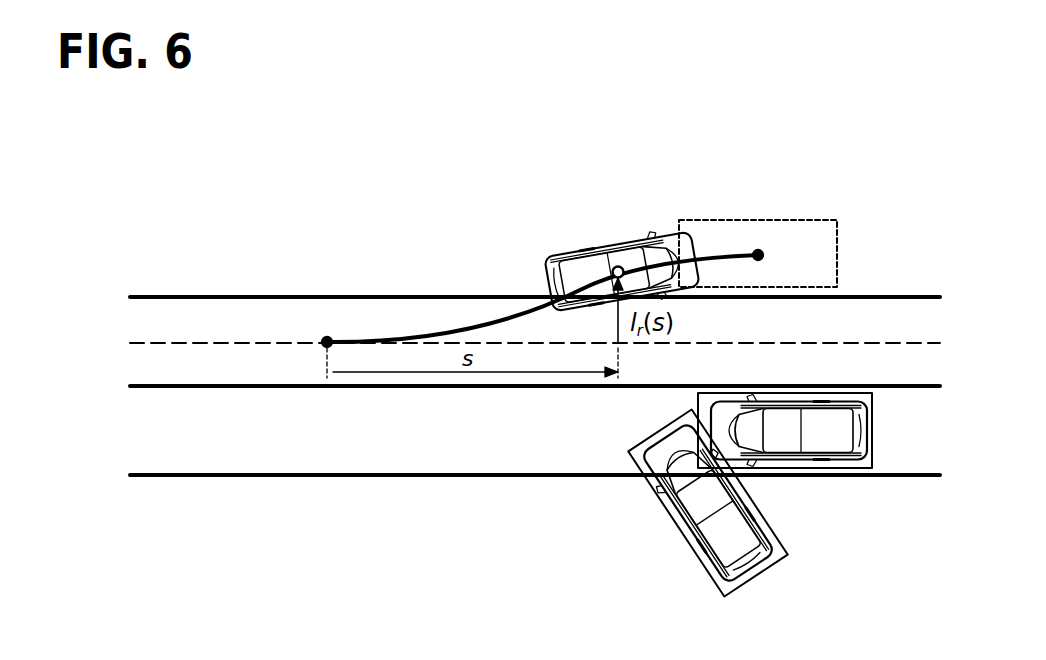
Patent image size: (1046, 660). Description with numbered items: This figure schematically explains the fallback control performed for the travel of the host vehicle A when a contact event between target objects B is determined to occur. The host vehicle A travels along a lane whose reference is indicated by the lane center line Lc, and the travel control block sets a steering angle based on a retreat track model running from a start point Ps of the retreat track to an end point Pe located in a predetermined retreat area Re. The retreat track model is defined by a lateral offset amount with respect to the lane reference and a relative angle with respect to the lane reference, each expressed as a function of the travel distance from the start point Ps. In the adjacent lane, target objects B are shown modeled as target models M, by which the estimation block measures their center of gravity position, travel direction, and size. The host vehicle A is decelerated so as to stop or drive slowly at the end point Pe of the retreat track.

The host vehicle A is at (613, 238).
The lane center line Lc is at (207, 337).
The start point of the retreat track Ps is at (327, 337).
The end point of the retreat track Pe is at (757, 250).
The retreat area Re is at (822, 220).
The target object B is at (818, 463).
The target model M is at (863, 476).